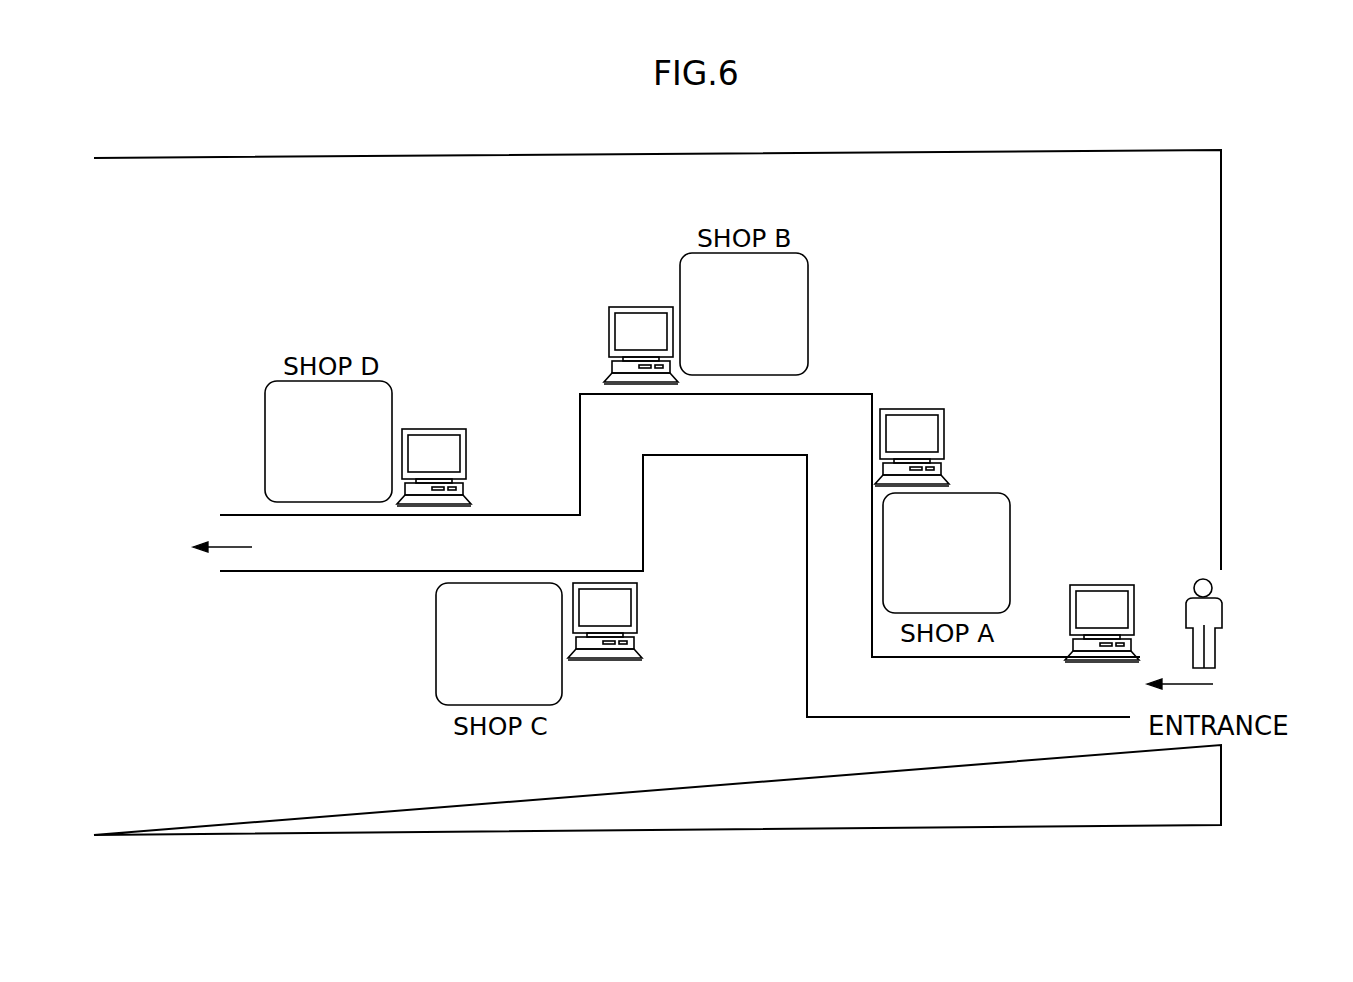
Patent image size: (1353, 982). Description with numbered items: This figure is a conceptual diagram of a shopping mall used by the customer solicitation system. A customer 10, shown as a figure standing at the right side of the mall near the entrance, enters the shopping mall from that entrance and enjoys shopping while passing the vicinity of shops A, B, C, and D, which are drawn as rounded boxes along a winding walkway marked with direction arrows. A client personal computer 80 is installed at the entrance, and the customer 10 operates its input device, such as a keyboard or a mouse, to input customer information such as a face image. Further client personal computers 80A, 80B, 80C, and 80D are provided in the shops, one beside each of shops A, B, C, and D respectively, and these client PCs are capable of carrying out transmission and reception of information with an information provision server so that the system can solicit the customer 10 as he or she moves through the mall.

The customer 10 is at (1233, 590).
The client personal computer 80 is at (1117, 585).
The client personal computer 80A is at (946, 424).
The client personal computer 80B is at (607, 331).
The client personal computer 80C is at (640, 598).
The client personal computer 80D is at (469, 445).